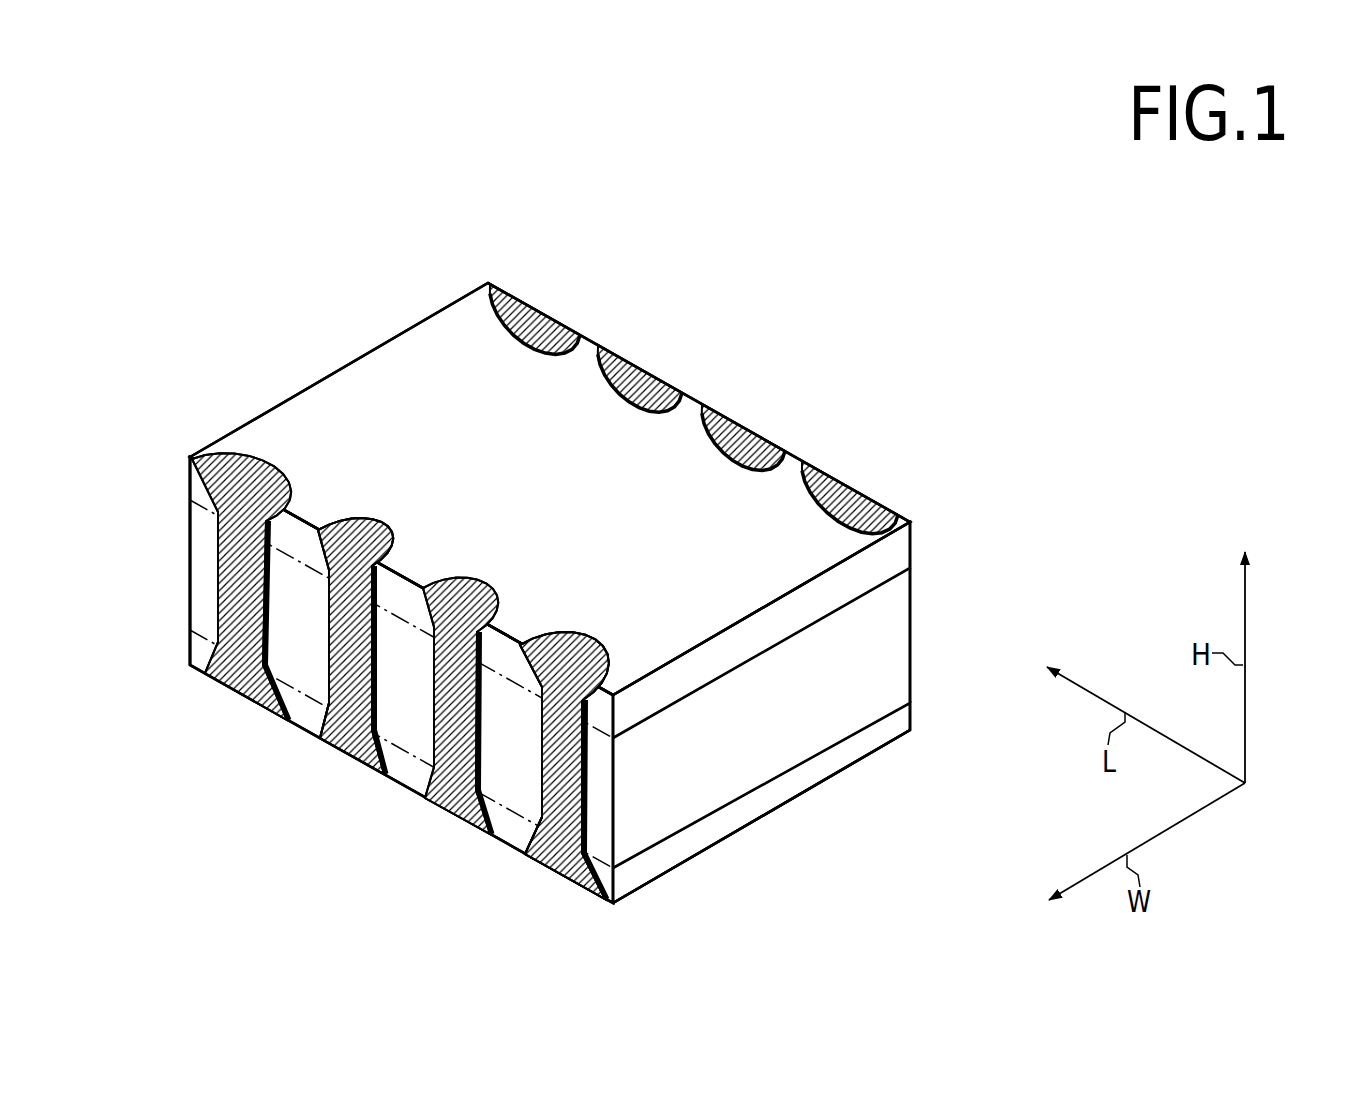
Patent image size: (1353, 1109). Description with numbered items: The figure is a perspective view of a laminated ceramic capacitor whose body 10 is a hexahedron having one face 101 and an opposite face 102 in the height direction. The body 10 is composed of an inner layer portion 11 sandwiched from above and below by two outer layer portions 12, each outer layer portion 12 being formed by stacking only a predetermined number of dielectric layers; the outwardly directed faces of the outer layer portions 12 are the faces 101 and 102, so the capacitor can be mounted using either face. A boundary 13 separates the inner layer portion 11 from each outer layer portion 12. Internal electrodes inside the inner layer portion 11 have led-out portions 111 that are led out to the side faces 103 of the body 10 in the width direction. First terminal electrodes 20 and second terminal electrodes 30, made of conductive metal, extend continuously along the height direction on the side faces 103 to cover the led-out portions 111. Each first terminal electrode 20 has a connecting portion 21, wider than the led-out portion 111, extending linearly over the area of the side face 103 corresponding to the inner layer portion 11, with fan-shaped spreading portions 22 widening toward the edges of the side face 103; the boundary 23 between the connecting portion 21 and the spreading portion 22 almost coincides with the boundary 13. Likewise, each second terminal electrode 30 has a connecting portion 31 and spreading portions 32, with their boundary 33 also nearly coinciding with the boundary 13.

The body 10 is at (268, 410).
The inner layer portion 11 is at (903, 636).
The outer layer portion 12 is at (905, 545).
The boundary 13 is at (900, 570).
The first terminal electrode 20 is at (653, 363).
The connecting portion 21 is at (328, 660).
The spreading portion 22 is at (358, 538).
The boundary 23 is at (325, 568).
The second terminal electrode 30 is at (545, 302).
The connecting portion 31 is at (540, 790).
The spreading portion 32 is at (570, 646).
The boundary 33 is at (540, 685).
The face 101 is at (387, 387).
The face 102 is at (716, 842).
The side face 103 is at (207, 656).
The led-out portion 111 is at (240, 551).